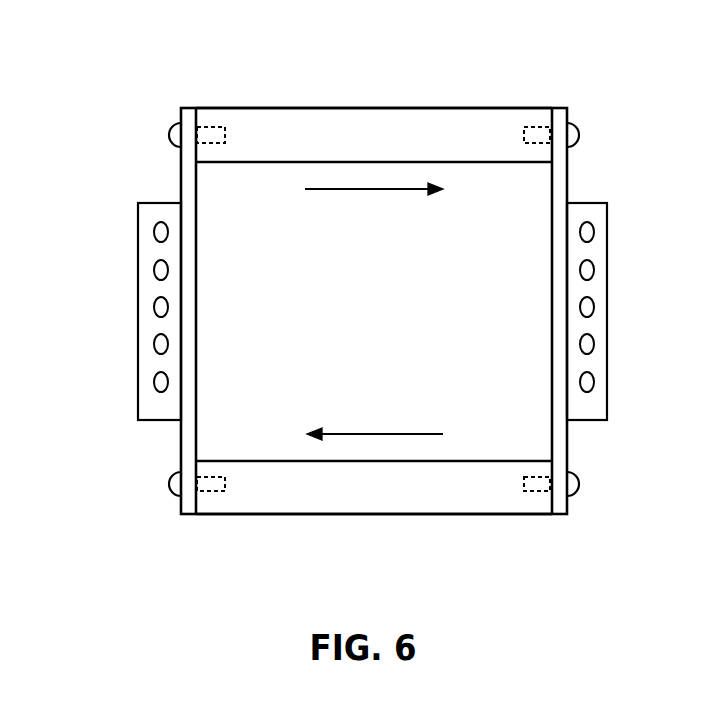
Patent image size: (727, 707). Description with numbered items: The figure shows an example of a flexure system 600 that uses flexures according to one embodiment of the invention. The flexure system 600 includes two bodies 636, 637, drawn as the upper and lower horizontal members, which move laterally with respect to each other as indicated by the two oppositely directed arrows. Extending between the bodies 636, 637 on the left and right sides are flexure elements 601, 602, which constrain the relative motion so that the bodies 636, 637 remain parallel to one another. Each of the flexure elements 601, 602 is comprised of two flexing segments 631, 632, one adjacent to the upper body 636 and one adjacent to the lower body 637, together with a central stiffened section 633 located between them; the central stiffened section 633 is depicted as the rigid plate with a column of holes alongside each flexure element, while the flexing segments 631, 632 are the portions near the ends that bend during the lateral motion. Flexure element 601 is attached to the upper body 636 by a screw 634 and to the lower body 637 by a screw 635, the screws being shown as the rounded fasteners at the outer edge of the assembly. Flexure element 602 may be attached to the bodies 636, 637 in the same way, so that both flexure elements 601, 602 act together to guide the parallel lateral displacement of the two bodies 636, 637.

The flexure system 600 is at (232, 33).
The flexure element 601 is at (197, 332).
The flexure element 602 is at (552, 343).
The flexing segment 631 is at (181, 180).
The flexing segment 632 is at (181, 446).
The central stiffened section 633 is at (138, 331).
The screw 634 is at (169, 133).
The screw 635 is at (168, 486).
The body 636 is at (343, 108).
The body 637 is at (427, 517).